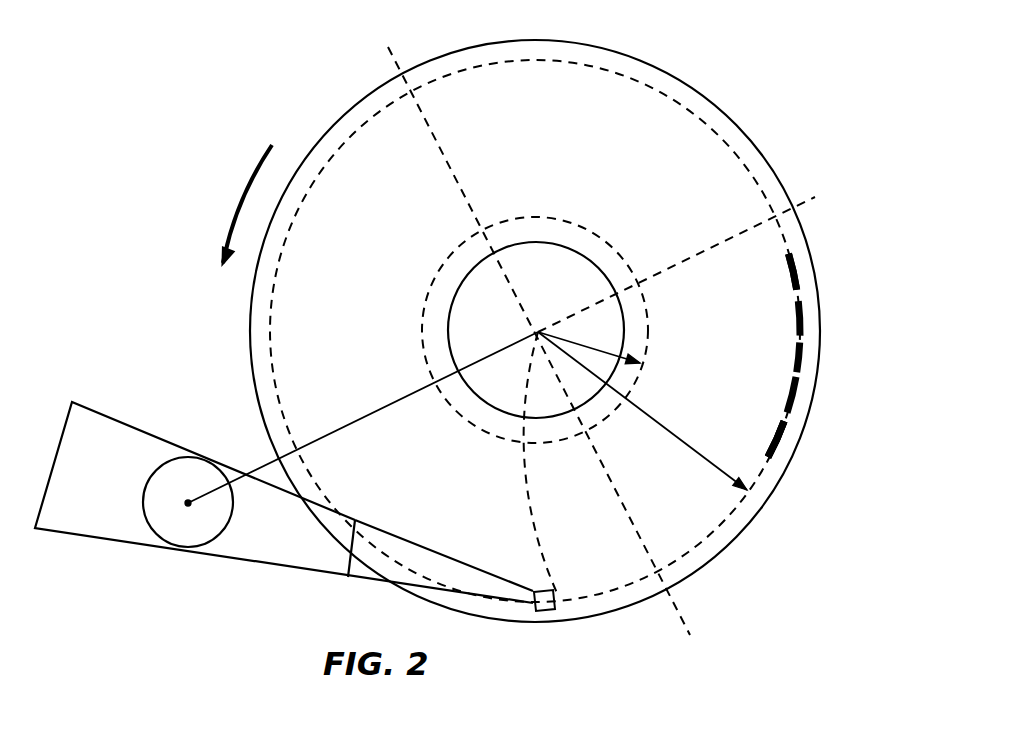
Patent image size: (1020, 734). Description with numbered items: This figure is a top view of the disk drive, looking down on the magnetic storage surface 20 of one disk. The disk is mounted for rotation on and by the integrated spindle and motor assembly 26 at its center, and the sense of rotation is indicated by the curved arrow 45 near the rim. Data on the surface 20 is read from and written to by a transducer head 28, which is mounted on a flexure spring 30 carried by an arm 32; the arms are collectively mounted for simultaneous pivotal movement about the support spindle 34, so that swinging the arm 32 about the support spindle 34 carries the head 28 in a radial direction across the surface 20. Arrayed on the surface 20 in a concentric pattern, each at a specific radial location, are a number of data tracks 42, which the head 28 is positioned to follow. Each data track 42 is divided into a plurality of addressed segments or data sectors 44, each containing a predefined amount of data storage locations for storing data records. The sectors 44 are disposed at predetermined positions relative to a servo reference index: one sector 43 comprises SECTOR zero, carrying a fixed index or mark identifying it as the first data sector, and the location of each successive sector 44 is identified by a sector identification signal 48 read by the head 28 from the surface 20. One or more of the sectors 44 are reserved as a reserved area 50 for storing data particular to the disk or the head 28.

The magnetic storage surface 20 is at (602, 107).
The integrated spindle and motor assembly 26 is at (545, 280).
The transducer head 28 is at (542, 611).
The flexure spring 30 is at (470, 580).
The arm 32 is at (282, 547).
The support spindle 34 is at (188, 506).
The data track 42 is at (789, 254).
The sector 43 is at (780, 440).
The data sector 44 is at (802, 323).
The direction of rotation 45 is at (245, 195).
The sector identification signal (SID) 48 is at (783, 427).
The reserved area 50 is at (800, 280).